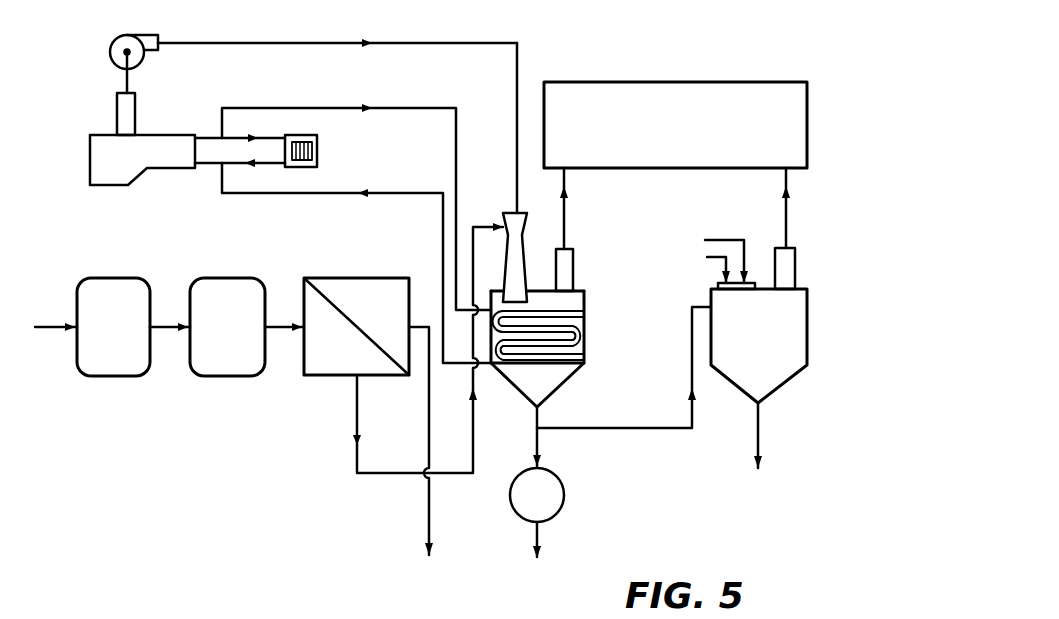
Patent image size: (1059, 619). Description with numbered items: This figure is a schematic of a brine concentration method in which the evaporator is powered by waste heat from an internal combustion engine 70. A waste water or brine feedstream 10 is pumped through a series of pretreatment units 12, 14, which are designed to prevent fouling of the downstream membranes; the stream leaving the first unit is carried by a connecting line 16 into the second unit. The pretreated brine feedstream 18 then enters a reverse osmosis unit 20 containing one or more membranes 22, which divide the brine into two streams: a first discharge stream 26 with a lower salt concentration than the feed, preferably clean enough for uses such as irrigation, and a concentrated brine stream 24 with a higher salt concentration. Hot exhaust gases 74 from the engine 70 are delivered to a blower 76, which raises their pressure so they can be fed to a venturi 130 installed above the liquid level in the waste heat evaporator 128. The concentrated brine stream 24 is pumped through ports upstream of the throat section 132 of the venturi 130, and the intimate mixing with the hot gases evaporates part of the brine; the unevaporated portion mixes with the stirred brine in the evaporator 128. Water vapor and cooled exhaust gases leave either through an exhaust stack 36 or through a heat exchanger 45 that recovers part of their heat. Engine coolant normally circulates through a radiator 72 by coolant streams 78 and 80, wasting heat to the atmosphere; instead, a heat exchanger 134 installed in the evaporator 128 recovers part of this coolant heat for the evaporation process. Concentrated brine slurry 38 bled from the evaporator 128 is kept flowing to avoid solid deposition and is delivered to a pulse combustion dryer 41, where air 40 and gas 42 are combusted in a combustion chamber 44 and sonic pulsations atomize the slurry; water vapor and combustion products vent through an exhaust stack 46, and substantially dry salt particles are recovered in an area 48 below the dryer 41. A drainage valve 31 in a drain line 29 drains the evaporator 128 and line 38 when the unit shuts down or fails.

The brine feedstream 10 is at (46, 324).
The pretreatment unit 12 is at (124, 278).
The pretreatment unit 14 is at (232, 378).
The transfer line 16 is at (165, 330).
The pretreated brine feedstream 18 is at (280, 320).
The reverse osmosis unit 20 is at (338, 278).
The membrane 22 is at (348, 310).
The concentrated brine stream 24 is at (388, 476).
The first discharge stream 26 is at (426, 440).
The drain line 29 is at (540, 445).
The drainage valve 31 is at (560, 510).
The exhaust stack 36 is at (574, 258).
The concentrated brine slurry 38 is at (624, 428).
The air 40 is at (716, 236).
The pulse combustion dryer 41 is at (808, 312).
The gas 42 is at (706, 258).
The combustion chamber 44 is at (716, 286).
The heat exchanger 45 is at (808, 104).
The exhaust stack 46 is at (796, 262).
The recovery area 48 is at (760, 420).
The internal combustion engine 70 is at (88, 158).
The radiator 72 is at (318, 150).
The hot exhaust gases 74 is at (200, 40).
The blower 76 is at (112, 34).
The coolant stream 78 is at (214, 136).
The coolant stream 80 is at (208, 166).
The waste heat evaporator 128 is at (585, 312).
The venturi 130 is at (527, 236).
The throat section 132 is at (512, 212).
The heat exchanger 134 is at (585, 362).